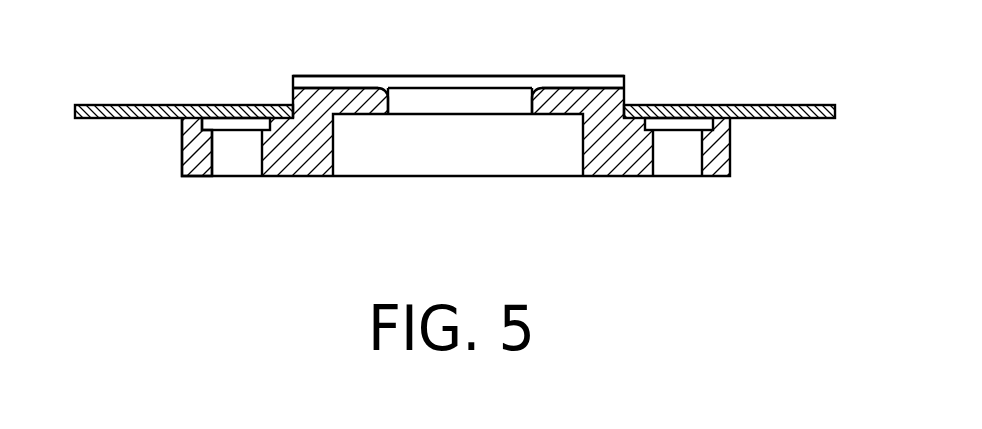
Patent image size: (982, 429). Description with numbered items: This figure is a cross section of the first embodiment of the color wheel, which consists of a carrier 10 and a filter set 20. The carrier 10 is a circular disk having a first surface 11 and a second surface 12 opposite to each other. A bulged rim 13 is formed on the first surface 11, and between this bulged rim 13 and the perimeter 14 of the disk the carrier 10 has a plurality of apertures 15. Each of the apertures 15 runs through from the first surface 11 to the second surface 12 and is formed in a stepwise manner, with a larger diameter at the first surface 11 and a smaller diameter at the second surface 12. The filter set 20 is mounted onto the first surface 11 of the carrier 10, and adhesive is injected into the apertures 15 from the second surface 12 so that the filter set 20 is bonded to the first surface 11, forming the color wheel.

The carrier 10 is at (735, 151).
The first surface 11 is at (640, 112).
The second surface 12 is at (305, 176).
The bulged rim 13 is at (605, 92).
The perimeter 14 is at (182, 140).
The apertures 15 is at (237, 131).
The filter set 20 is at (788, 103).